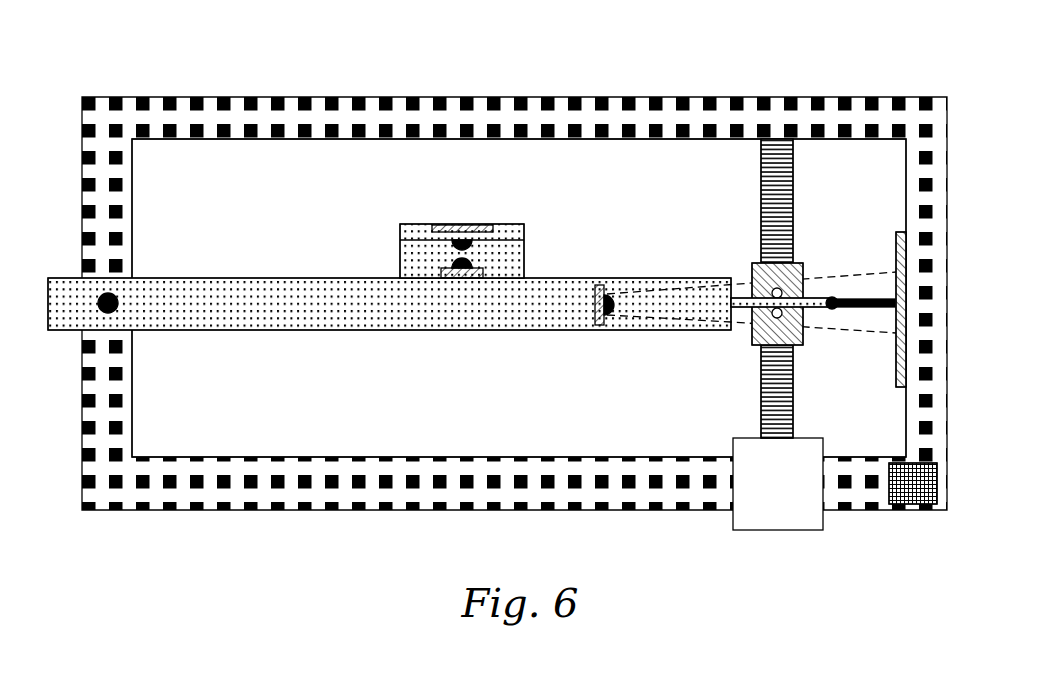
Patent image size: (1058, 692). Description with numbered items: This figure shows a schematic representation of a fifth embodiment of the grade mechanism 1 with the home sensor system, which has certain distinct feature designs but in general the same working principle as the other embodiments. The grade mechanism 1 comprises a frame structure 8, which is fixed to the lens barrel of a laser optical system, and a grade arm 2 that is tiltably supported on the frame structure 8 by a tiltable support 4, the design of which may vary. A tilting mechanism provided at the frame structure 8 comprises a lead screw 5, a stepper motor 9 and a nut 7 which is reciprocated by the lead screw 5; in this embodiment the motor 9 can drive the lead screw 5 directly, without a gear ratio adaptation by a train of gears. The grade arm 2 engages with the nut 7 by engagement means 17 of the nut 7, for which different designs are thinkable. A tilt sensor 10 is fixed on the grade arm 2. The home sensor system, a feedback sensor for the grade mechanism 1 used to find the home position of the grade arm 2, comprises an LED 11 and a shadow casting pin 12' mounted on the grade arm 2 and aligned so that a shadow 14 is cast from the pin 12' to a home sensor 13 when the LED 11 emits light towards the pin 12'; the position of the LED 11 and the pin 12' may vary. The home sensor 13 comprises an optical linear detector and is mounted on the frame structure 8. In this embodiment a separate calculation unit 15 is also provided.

The grade mechanism 1 is at (449, 78).
The grade arm 2 is at (212, 287).
The tiltable support 4 is at (108, 313).
The lead screw 5 is at (775, 150).
The nut 7 is at (757, 263).
The frame structure 8 is at (573, 120).
The stepper motor 9 is at (750, 479).
The tilt sensor 10 is at (440, 203).
The LED 11 is at (600, 310).
The pin 12' is at (816, 246).
The home sensor 13 is at (897, 353).
The shadow 14 is at (878, 307).
The calculation unit 15 is at (920, 482).
The engagement means 17 is at (777, 318).